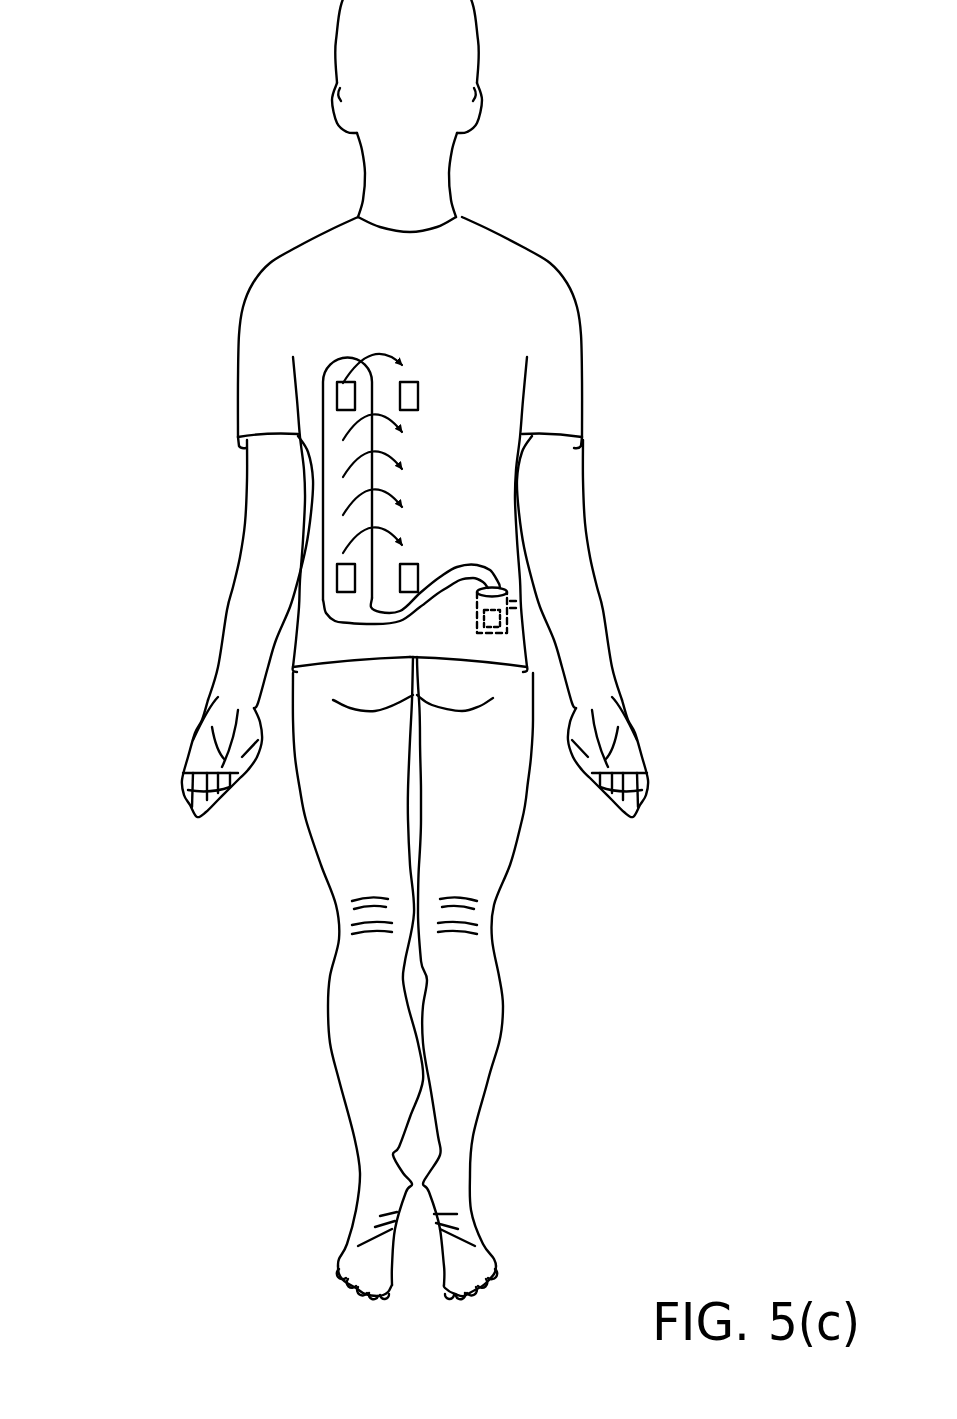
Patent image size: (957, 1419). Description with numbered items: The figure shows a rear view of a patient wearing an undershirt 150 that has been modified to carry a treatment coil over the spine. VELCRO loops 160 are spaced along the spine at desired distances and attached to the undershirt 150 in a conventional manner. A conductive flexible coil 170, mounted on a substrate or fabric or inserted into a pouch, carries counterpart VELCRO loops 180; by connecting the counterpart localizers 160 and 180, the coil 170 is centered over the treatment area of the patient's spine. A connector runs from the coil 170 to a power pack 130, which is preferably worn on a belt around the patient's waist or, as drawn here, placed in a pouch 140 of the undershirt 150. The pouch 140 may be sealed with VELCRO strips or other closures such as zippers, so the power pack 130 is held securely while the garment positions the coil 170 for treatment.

The power pack 130 is at (510, 623).
The pouch 140 is at (510, 597).
The undershirt 150 is at (488, 232).
The VELCRO loops 160 is at (420, 563).
The conductive flexible coil 170 is at (340, 493).
The VELCRO loops 180 is at (337, 395).